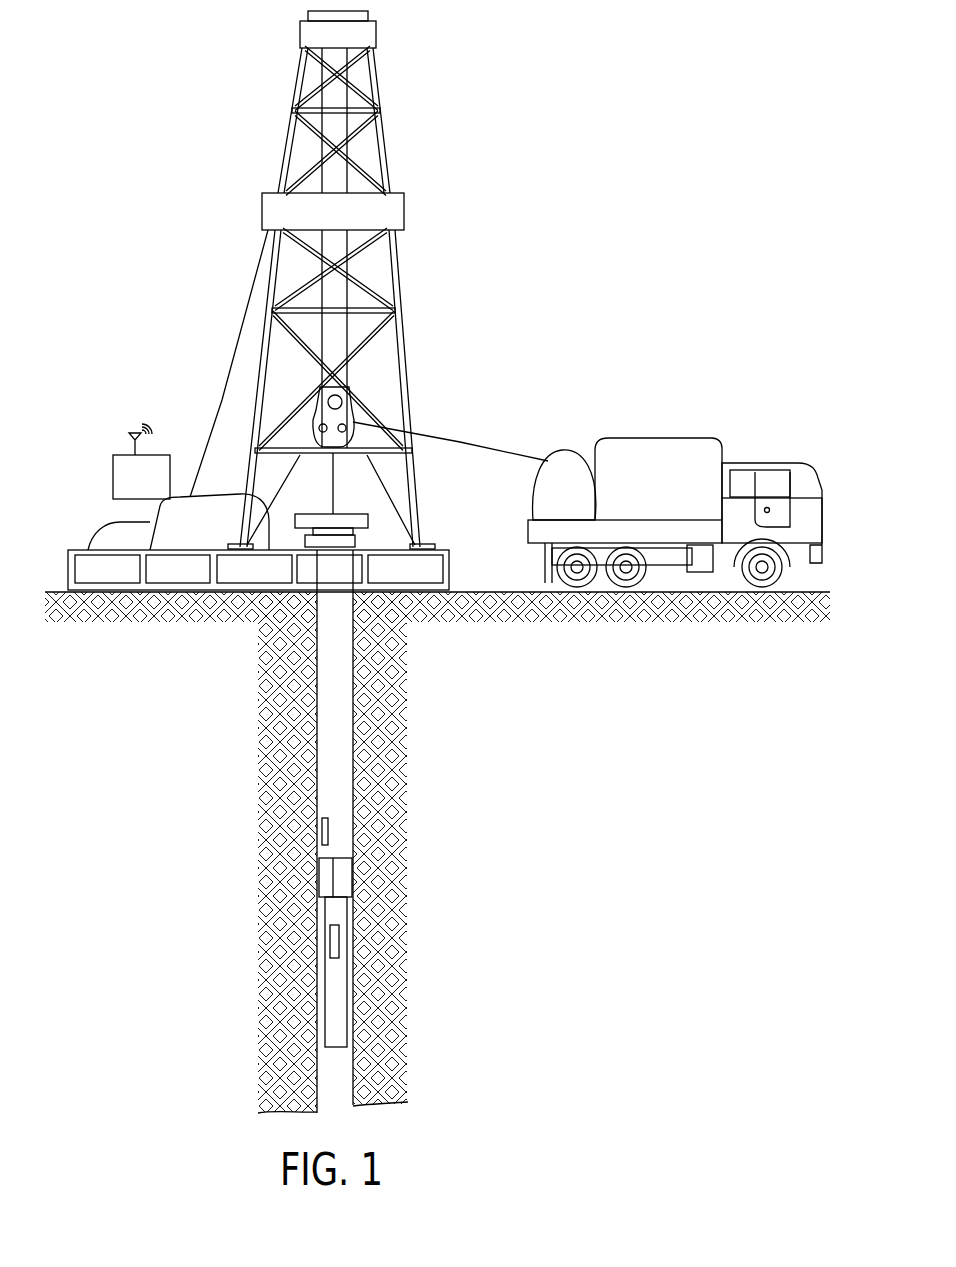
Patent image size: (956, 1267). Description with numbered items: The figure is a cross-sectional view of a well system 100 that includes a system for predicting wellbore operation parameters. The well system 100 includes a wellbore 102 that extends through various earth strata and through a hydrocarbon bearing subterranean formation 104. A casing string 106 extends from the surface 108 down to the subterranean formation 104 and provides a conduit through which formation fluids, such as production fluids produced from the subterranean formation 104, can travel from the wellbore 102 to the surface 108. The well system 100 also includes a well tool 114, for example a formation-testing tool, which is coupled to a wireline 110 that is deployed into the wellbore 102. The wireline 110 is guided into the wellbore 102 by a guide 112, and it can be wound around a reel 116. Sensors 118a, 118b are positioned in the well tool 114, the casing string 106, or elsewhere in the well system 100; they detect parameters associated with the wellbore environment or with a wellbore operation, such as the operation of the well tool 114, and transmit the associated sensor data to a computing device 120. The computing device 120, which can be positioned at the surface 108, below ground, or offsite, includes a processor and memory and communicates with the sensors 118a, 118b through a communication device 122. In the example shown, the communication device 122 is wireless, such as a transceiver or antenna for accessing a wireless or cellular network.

The well system 100 is at (541, 247).
The wellbore 102 is at (357, 803).
The subterranean formation 104 is at (407, 720).
The casing string 106 is at (323, 795).
The surface 108 is at (368, 515).
The wireline 110 is at (461, 442).
The guide 112 is at (345, 393).
The well tool 114 is at (347, 903).
The reel 116 is at (570, 447).
The sensor 118a is at (338, 933).
The sensor 118b is at (318, 832).
The computing device 120 is at (113, 478).
The communication device 122 is at (133, 442).